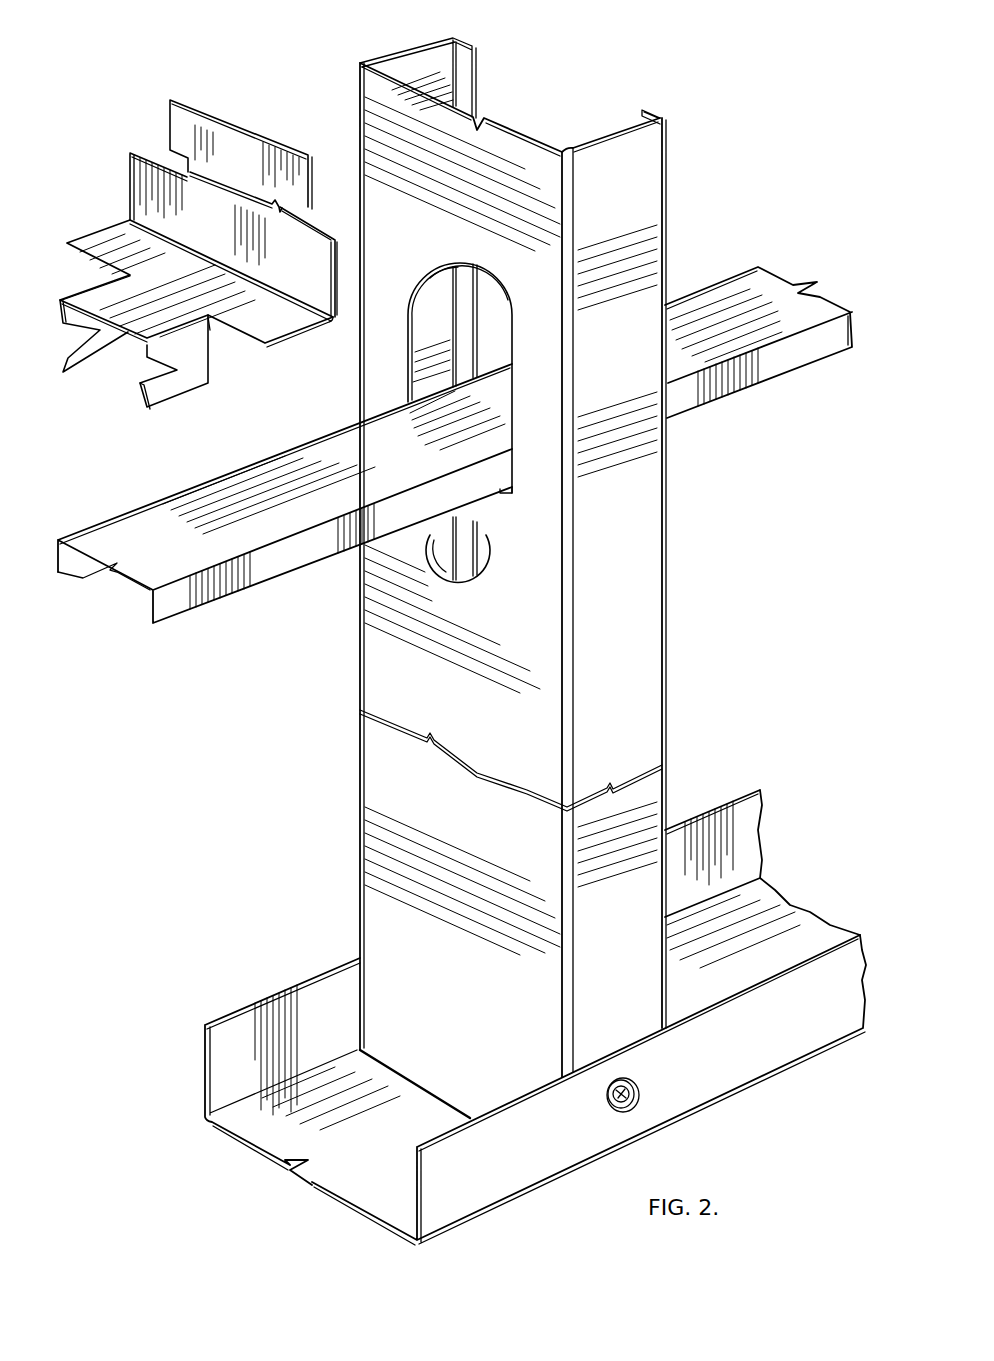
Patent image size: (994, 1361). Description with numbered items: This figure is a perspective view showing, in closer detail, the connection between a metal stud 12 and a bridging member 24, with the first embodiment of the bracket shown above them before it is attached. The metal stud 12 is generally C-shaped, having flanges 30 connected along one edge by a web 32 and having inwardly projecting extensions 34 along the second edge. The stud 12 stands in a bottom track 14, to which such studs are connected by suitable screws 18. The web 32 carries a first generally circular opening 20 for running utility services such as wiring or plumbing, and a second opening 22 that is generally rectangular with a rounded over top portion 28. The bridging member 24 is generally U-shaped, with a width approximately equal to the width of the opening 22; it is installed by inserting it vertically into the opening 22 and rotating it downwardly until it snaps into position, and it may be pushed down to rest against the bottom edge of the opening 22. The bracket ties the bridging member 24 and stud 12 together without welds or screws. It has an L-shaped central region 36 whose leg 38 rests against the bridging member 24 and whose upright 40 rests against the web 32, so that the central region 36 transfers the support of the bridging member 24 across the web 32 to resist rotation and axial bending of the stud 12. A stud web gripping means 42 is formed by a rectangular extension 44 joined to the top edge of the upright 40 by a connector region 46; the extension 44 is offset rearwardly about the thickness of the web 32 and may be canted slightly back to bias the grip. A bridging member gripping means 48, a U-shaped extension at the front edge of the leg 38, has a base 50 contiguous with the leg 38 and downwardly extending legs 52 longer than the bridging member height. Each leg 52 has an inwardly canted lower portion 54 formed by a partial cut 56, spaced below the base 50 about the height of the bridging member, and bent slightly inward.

The metal stud 12 is at (679, 683).
The bottom track 14 is at (772, 1060).
The screw 18 is at (633, 1105).
The first generally circular opening 20 is at (462, 563).
The second opening 22 is at (489, 323).
The bridging member 24 is at (770, 362).
The rounded over top portion 28 is at (487, 280).
The flange 30 is at (607, 157).
The web 32 is at (510, 147).
The inwardly projecting extension 34 is at (655, 119).
The L-shaped central region 36 is at (130, 223).
The leg 38 is at (280, 322).
The upright 40 is at (313, 247).
The stud web gripping means 42 is at (163, 123).
The rectangular extension 44 is at (197, 122).
The connector region 46 is at (243, 190).
The bridging member gripping means 48 is at (220, 364).
The base 50 is at (100, 292).
The downwardly extending leg 52 is at (187, 352).
The inwardly canted lower portion 54 is at (145, 396).
The partial cut 56 is at (146, 380).